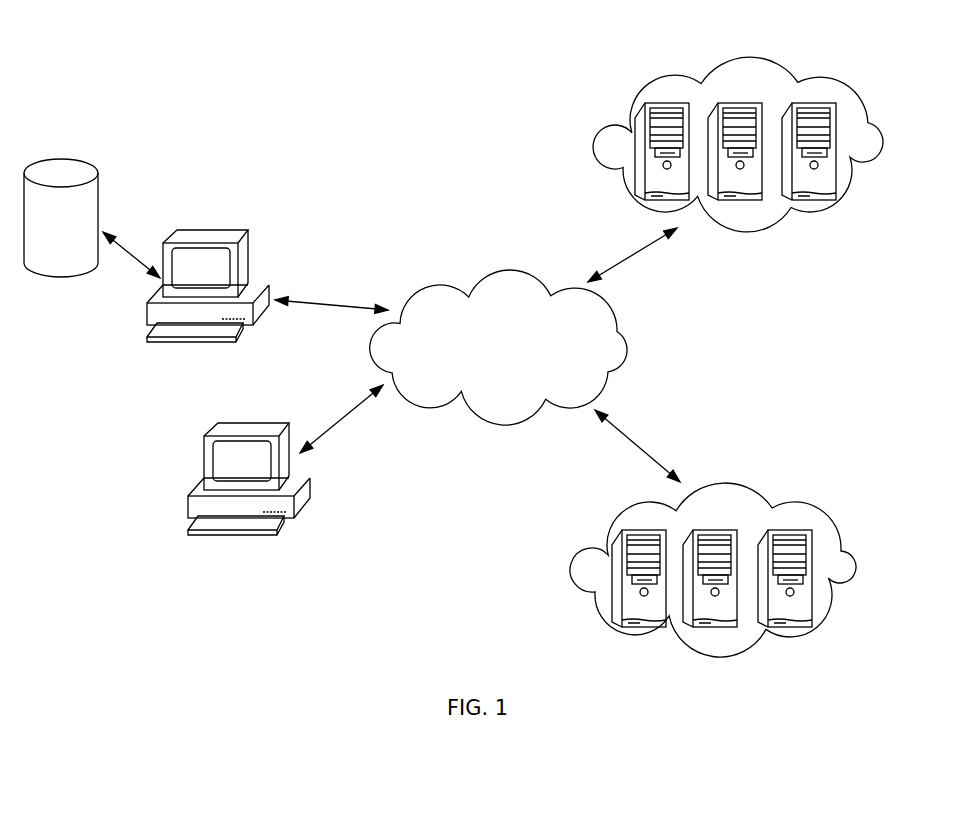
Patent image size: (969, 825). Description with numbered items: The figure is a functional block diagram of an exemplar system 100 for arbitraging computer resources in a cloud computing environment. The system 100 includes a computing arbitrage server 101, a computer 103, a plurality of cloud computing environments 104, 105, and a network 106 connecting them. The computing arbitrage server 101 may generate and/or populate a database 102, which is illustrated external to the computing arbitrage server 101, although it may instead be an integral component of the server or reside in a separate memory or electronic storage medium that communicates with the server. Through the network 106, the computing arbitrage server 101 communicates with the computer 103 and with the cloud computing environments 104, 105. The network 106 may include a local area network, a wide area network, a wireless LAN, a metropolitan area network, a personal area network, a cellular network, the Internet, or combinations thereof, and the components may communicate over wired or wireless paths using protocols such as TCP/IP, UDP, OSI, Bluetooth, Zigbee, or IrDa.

The system for arbitraging computer resources in a cloud computing environment 100 is at (173, 57).
The computing arbitrage server 101 is at (147, 318).
The database 102 is at (88, 167).
The computer 103 is at (187, 517).
The cloud computing environment 104 is at (625, 102).
The cloud computing environment 105 is at (600, 528).
The network 106 is at (490, 273).